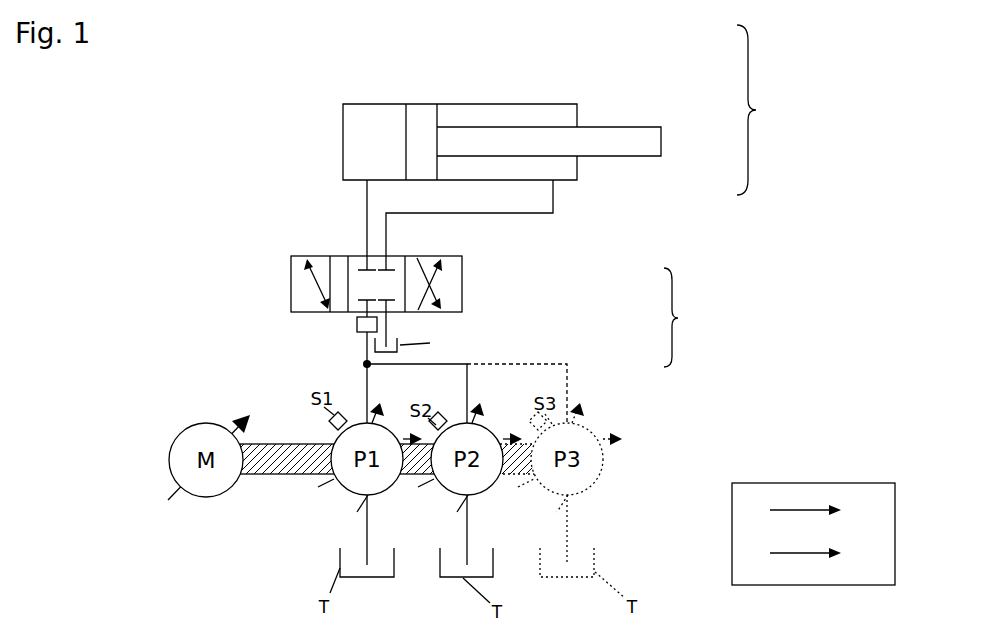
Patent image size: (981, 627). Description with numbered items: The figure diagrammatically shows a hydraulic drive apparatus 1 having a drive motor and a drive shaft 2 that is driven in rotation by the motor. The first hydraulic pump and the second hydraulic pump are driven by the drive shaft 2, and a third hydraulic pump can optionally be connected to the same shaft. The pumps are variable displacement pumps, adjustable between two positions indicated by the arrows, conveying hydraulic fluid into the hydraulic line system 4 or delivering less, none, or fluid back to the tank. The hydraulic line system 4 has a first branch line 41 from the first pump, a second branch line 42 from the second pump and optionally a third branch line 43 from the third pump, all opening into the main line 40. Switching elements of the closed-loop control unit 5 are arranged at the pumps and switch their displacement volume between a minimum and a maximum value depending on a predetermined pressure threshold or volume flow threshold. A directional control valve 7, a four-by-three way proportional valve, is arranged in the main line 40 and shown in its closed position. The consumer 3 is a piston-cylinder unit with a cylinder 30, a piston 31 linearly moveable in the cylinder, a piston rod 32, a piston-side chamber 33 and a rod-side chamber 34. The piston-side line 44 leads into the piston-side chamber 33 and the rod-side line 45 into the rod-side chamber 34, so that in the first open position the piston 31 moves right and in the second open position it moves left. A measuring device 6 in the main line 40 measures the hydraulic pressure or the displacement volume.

The hydraulic drive apparatus 1 is at (155, 140).
The drive shaft 2 is at (293, 475).
The consumer 3 is at (557, 110).
The cylinder 30 is at (537, 110).
The piston 31 is at (422, 133).
The piston rod 32 is at (661, 142).
The piston-side chamber 33 is at (367, 118).
The rod-side chamber 34 is at (562, 118).
The hydraulic line system 4 is at (530, 346).
The main line 40 is at (378, 332).
The first branch line 41 is at (367, 393).
The second branch line 42 is at (467, 385).
The third branch line 43 is at (567, 380).
The piston-side line 44 is at (365, 203).
The rod-side line 45 is at (436, 214).
The closed-loop control unit 5 is at (895, 565).
The measuring device 6 is at (357, 324).
The directional control valve 7 is at (462, 288).